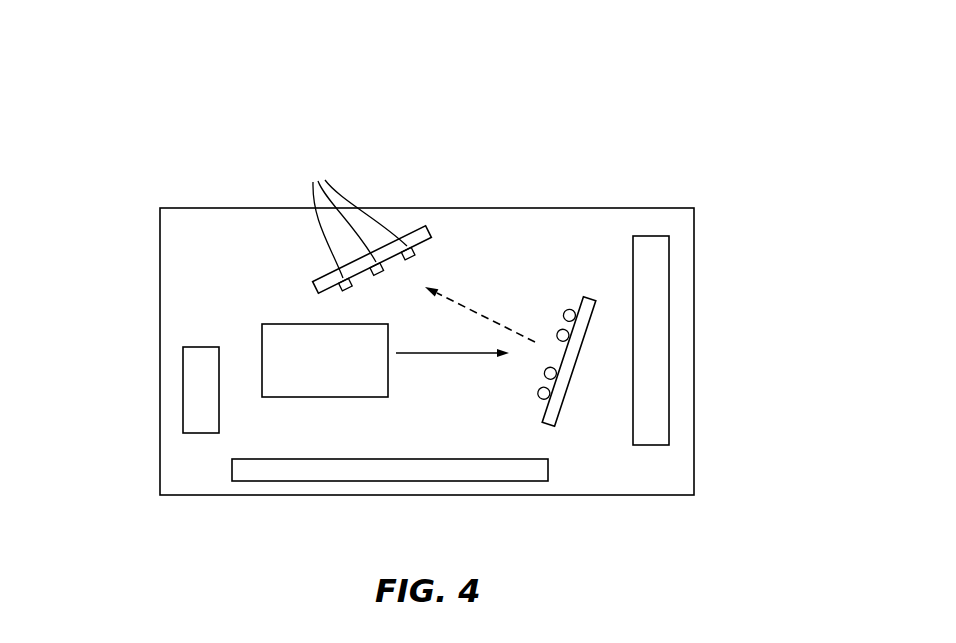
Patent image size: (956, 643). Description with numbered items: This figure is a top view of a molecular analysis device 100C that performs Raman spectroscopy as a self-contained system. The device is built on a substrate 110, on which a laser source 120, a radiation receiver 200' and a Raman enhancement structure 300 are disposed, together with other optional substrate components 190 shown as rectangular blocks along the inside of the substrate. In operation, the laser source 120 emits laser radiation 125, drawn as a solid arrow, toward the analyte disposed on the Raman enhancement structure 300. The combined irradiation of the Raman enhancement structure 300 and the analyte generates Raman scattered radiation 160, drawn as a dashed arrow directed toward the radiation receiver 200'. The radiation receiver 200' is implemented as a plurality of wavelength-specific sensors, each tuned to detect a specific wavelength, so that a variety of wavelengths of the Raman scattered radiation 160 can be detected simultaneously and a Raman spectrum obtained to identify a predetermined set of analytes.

The molecular analysis device 100C is at (116, 112).
The substrate 110 is at (694, 325).
The laser source 120 is at (261, 335).
The laser radiation 125 is at (452, 354).
The Raman scattered radiation 160 is at (488, 317).
The substrate components 190 is at (183, 388).
The radiation receiver 200' is at (375, 213).
The Raman enhancement structure 300 is at (599, 423).